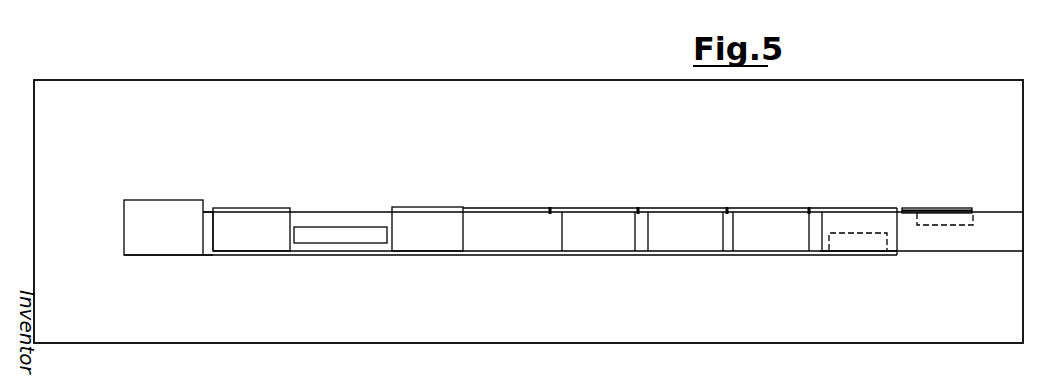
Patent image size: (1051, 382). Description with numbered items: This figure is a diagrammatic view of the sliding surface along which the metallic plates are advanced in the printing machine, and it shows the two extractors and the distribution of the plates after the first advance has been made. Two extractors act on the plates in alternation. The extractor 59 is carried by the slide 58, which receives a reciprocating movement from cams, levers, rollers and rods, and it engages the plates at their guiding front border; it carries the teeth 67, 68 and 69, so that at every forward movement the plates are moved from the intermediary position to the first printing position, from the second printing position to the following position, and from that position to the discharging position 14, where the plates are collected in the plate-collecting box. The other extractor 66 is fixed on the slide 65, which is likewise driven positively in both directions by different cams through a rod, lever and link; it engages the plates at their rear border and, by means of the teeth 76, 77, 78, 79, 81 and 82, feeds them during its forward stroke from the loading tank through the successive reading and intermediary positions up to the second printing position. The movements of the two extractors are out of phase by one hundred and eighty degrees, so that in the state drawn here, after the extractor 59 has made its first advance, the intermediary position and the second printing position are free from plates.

The discharging position 14 is at (158, 248).
The tooth of extractor 59 69 is at (207, 255).
The tooth of extractor 59 68 is at (293, 254).
The tooth of extractor 66 82 is at (466, 209).
The tooth of extractor 59 67 is at (467, 254).
The tooth of extractor 66 81 is at (550, 210).
The tooth of extractor 66 79 is at (638, 208).
The tooth of extractor 66 78 is at (727, 208).
The tooth of extractor 66 77 is at (809, 208).
The tooth of extractor 66 76 is at (897, 209).
The extractor 66 is at (917, 212).
The slide 65 is at (975, 209).
The slide 58 is at (863, 240).
The extractor 59 is at (840, 253).